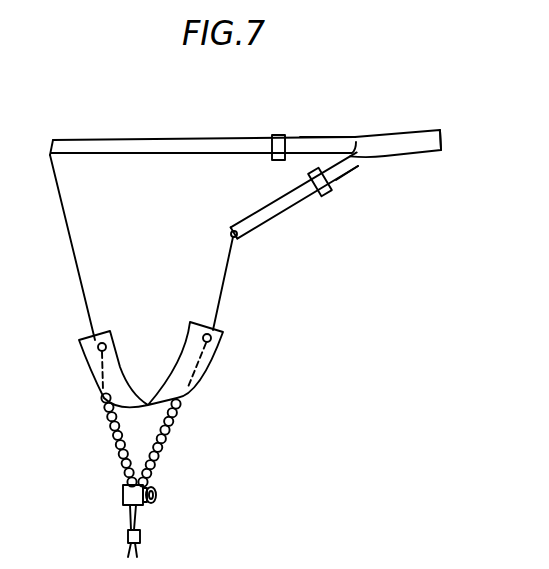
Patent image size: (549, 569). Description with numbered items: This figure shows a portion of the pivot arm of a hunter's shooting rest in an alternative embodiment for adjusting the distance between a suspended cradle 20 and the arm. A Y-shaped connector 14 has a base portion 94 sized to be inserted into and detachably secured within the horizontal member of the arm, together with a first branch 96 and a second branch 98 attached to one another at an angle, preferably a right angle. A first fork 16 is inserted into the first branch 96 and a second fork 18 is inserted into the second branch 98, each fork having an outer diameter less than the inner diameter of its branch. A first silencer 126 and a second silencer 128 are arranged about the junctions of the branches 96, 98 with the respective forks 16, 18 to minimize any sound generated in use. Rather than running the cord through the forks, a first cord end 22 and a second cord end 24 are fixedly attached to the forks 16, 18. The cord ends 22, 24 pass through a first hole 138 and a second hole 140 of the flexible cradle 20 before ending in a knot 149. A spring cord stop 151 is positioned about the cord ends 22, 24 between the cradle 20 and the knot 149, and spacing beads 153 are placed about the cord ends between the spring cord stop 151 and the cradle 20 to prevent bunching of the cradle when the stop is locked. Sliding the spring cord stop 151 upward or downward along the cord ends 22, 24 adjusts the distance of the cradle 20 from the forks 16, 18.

The Y-shaped connector 14 is at (382, 133).
The first fork 16 is at (135, 138).
The second fork 18 is at (260, 210).
The cradle 20 is at (202, 370).
The first cord end 22 is at (76, 247).
The second cord end 24 is at (223, 285).
The base portion 94 is at (427, 151).
The first branch 96 is at (333, 142).
The second branch 98 is at (341, 177).
The first silencer 126 is at (280, 135).
The second silencer 128 is at (328, 195).
The first hole 138 is at (100, 350).
The second hole 140 is at (211, 341).
The knot 149 is at (140, 537).
The spring cord stop 151 is at (122, 495).
The spacing beads 153 is at (112, 438).